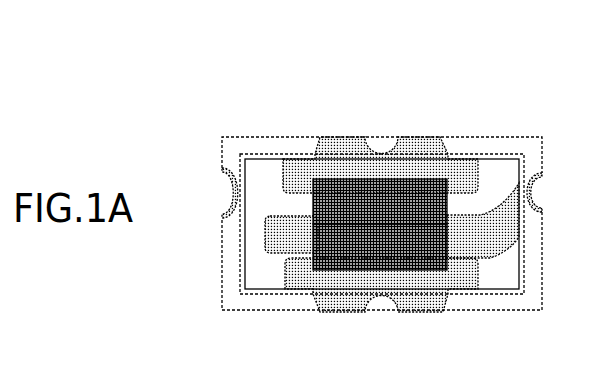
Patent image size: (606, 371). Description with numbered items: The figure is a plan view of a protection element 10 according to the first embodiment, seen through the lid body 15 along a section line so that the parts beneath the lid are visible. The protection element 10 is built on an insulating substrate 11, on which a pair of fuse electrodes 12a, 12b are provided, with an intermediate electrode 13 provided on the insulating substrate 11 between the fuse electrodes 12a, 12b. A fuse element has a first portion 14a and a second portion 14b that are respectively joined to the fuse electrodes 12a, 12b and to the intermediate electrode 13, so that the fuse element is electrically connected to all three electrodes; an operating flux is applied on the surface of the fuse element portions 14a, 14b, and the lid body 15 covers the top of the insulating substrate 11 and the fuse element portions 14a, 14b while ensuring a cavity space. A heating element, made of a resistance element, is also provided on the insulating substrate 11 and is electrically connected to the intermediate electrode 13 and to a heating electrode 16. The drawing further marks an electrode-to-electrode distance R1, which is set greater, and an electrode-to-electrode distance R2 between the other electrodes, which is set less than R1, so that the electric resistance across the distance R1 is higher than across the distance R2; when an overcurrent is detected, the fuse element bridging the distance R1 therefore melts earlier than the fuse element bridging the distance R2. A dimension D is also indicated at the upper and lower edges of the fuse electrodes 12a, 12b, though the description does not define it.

The protection element 10 is at (297, 98).
The insulating substrate 11 is at (233, 300).
The fuse electrode 12a is at (332, 170).
The fuse electrode 12b is at (342, 304).
The intermediate electrode 13 is at (543, 194).
The first portion of the fuse element 14a is at (432, 178).
The second portion of the fuse element 14b is at (323, 272).
The lid body 15 is at (262, 152).
The heating electrode 16 is at (231, 183).
The electrode-to-electrode distance R1 is at (291, 193).
The electrode-to-electrode distance R2 is at (260, 245).
The dimension D is at (418, 137).